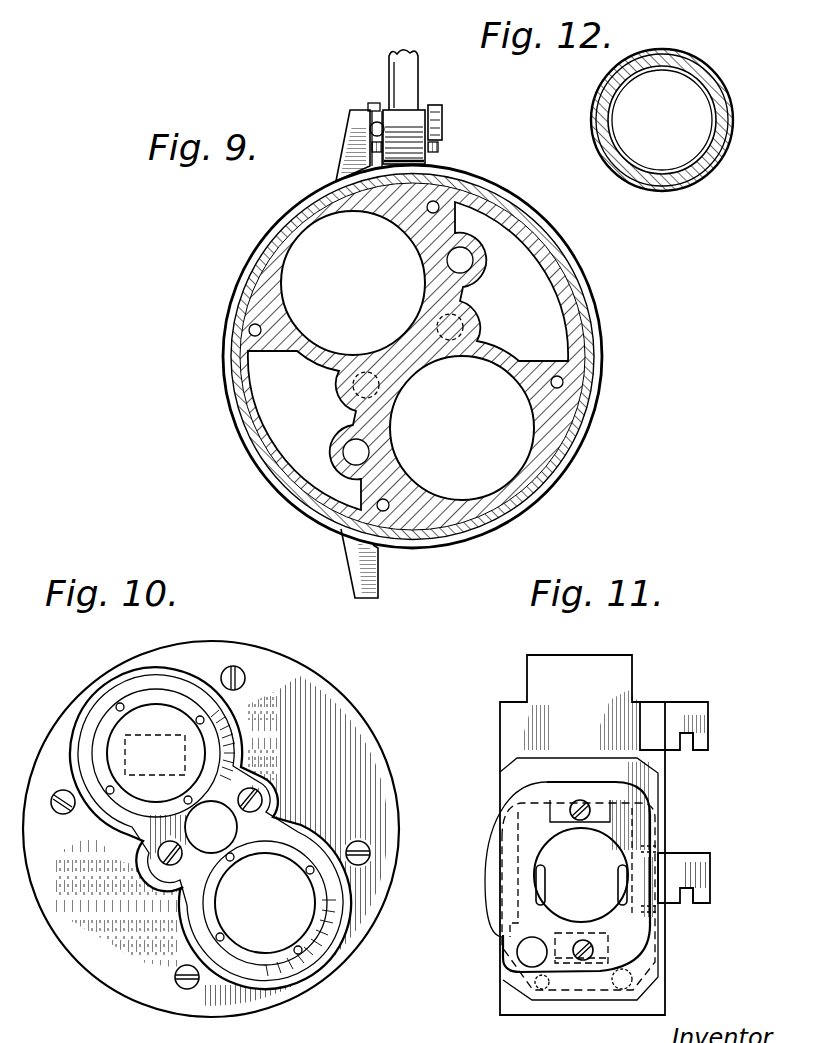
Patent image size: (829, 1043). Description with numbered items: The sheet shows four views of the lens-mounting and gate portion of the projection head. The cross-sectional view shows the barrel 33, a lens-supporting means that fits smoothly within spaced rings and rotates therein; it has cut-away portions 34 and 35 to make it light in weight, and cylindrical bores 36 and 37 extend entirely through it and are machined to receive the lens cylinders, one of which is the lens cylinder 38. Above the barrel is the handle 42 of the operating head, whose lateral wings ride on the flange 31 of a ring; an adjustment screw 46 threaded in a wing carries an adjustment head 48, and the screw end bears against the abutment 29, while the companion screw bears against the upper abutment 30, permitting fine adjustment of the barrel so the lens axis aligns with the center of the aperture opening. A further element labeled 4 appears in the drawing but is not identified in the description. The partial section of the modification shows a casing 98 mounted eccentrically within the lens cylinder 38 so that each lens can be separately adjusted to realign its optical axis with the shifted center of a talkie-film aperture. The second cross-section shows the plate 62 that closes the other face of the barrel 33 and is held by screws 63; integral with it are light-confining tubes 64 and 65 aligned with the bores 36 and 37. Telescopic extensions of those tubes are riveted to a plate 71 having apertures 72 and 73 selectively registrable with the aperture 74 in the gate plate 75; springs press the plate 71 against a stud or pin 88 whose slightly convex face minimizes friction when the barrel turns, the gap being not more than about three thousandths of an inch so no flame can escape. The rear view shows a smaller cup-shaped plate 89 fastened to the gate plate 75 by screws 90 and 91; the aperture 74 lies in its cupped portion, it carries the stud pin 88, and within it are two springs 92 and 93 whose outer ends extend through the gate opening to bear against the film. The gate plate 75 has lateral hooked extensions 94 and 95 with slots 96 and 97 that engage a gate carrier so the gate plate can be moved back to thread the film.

In FIG. 9, the nut 4 is at (438, 130).
In FIG. 9, the abutment 29 is at (354, 149).
In FIG. 9, the upper abutment 30 is at (360, 563).
In FIG. 9, the flange 31 is at (602, 331).
In FIG. 9, the barrel 33 is at (552, 425).
In FIG. 9, the cut-away portion 34 is at (278, 447).
In FIG. 9, the cut-away portion 35 is at (545, 262).
In FIG. 9, the cylindrical bore 36 is at (405, 335).
In FIG. 9, the cylindrical bore 37 is at (468, 330).
In FIG. 12, the lens cylinder 38 is at (733, 118).
In FIG. 9, the handle 42 is at (400, 81).
In FIG. 9, the adjustment screw 46 is at (386, 118).
In FIG. 9, the adjustment head 48 is at (368, 107).
In FIG. 12, the casing 98 is at (666, 160).
In FIG. 10, the plate 62 is at (333, 746).
In FIG. 10, the screws 63 is at (240, 683).
In FIG. 10, the light-confining tube 64 is at (357, 946).
In FIG. 10, the light-confining tube 65 is at (172, 670).
In FIG. 10, the plate 71 is at (192, 800).
In FIG. 10, the aperture 72 is at (122, 720).
In FIG. 10, the aperture 73 is at (247, 953).
In FIG. 10, the stud or pin 88 is at (193, 838).
In FIG. 11, the stud or pin 88 is at (518, 952).
In FIG. 11, the aperture 74 is at (563, 830).
In FIG. 11, the gate plate 75 is at (512, 738).
In FIG. 11, the cup-shaped plate 89 is at (502, 822).
In FIG. 11, the screw 90 is at (583, 798).
In FIG. 11, the screw 91 is at (585, 962).
In FIG. 11, the spring 92 is at (540, 884).
In FIG. 11, the spring 93 is at (624, 884).
In FIG. 11, the lateral hooked extension 94 is at (707, 712).
In FIG. 11, the lateral hooked extension 95 is at (703, 838).
In FIG. 11, the slot 96 is at (688, 747).
In FIG. 11, the slot 97 is at (687, 903).